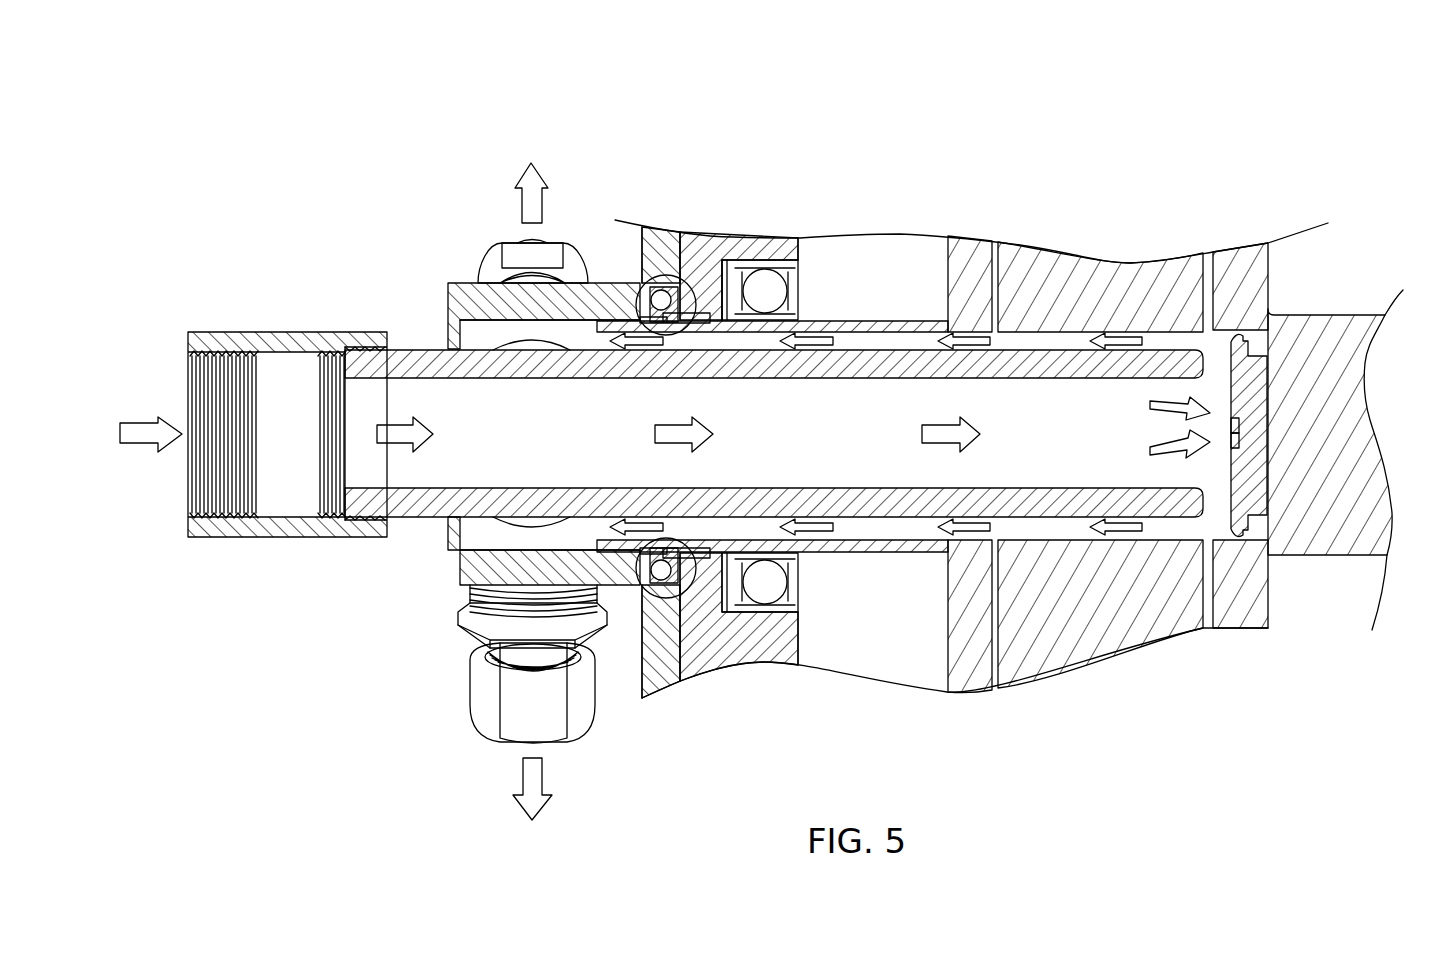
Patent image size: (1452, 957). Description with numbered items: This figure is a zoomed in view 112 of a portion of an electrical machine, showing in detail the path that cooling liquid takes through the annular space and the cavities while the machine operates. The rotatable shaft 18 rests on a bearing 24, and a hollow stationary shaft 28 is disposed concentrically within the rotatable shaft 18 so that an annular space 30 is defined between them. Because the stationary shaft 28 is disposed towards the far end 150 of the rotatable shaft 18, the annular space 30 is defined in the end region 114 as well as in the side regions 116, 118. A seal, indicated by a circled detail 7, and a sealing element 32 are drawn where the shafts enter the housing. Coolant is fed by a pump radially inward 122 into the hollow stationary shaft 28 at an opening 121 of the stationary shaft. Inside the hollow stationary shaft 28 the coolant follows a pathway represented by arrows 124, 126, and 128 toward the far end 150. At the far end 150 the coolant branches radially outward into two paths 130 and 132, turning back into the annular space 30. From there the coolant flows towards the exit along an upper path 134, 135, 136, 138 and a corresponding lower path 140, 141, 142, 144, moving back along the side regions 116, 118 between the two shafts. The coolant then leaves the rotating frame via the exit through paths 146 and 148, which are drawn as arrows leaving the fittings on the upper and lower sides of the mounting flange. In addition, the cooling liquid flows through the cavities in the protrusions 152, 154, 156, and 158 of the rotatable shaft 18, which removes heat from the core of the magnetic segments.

The bearing 7 is at (650, 268).
The rotatable shaft 18 is at (757, 236).
The bearing 24 is at (782, 288).
The stationary shaft 28 is at (430, 505).
The annular space 30 is at (1220, 427).
The seal 32 is at (668, 287).
The zoomed in view 112 is at (1315, 122).
The end region 114 is at (1222, 497).
The side region 116 is at (876, 335).
The side region 118 is at (890, 550).
The opening 121 is at (190, 368).
The radially inward coolant feed 122 is at (153, 455).
The coolant pathway arrow 124 is at (400, 437).
The coolant pathway arrow 126 is at (673, 437).
The coolant pathway arrow 128 is at (940, 437).
The radially outward path 130 is at (1165, 410).
The radially outward path 132 is at (1165, 452).
The coolant exit path 134 is at (1107, 352).
The coolant exit path 135 is at (960, 350).
The coolant exit path 136 is at (806, 350).
The coolant exit path 138 is at (632, 350).
The coolant exit path 140 is at (1078, 498).
The coolant exit path 141 is at (916, 499).
The coolant exit path 142 is at (781, 499).
The coolant exit path 144 is at (612, 499).
The exit path 146 is at (536, 180).
The exit path 148 is at (525, 805).
The far end 150 is at (1222, 352).
The protrusion 152 is at (1213, 262).
The protrusion 154 is at (993, 245).
The protrusion 156 is at (1213, 632).
The protrusion 158 is at (995, 693).